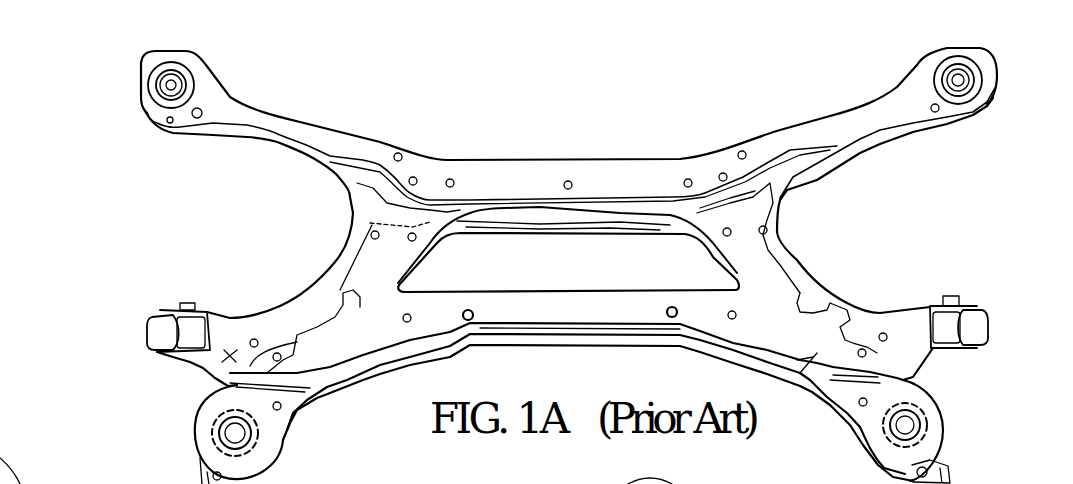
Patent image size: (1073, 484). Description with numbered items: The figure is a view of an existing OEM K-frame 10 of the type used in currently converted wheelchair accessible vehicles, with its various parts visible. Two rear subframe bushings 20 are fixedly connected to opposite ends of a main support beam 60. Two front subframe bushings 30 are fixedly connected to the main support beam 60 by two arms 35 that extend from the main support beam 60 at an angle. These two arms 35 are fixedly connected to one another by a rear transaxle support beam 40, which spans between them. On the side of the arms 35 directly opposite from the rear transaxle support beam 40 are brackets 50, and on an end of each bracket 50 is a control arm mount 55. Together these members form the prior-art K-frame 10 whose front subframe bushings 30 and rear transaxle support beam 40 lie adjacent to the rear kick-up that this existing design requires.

The OEM K-frame 10 is at (742, 102).
The rear subframe bushing 20 is at (168, 83).
The front subframe bushing 30 is at (224, 432).
The arm 35 is at (370, 255).
The rear transaxle support beam 40 is at (553, 320).
The bracket 50 is at (226, 348).
The control arm mount 55 is at (153, 322).
The main support beam 60 is at (569, 182).